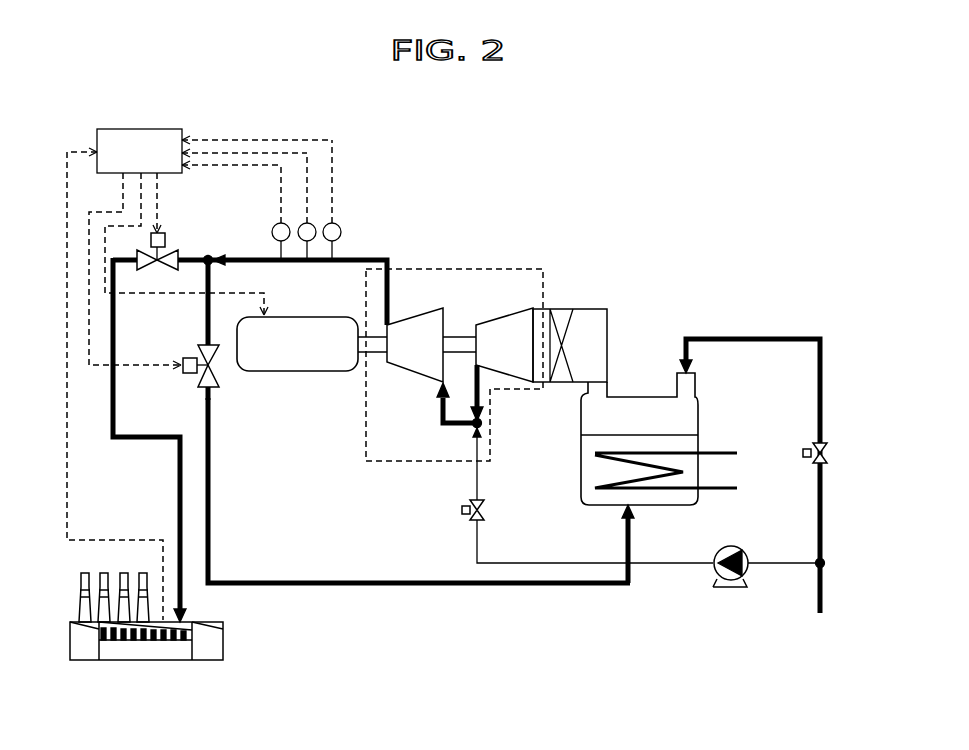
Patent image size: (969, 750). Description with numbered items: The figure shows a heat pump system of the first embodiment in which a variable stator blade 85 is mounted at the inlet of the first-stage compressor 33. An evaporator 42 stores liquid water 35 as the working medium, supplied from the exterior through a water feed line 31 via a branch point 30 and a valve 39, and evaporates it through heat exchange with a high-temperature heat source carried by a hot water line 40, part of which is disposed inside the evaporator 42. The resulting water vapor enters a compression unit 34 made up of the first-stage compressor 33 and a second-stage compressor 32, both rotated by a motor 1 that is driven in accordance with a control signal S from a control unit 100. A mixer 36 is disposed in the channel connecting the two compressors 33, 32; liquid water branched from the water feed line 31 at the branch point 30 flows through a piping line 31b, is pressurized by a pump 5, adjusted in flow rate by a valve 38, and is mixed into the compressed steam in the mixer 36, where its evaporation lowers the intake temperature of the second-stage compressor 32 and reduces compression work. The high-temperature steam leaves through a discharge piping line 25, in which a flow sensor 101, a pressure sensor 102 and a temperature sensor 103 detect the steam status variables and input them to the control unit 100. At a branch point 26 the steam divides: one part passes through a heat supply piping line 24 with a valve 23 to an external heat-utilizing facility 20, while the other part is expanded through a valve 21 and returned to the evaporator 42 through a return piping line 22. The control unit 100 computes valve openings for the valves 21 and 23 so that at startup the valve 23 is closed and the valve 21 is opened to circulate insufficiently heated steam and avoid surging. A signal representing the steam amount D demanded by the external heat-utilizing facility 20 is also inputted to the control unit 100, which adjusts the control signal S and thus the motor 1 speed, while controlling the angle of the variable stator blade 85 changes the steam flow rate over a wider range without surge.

The control unit 100 is at (140, 129).
The flow sensor 101 is at (272, 228).
The pressure sensor 102 is at (314, 224).
The temperature sensor 103 is at (338, 225).
The valve 23 is at (163, 249).
The heat supply piping line 24 is at (114, 330).
The discharge piping line 25 is at (378, 257).
The branch point 26 is at (212, 255).
The valve 21 is at (195, 378).
The control signal S is at (268, 298).
The motor 1 is at (297, 372).
The compression unit 34 is at (483, 261).
The second-stage compressor 32 is at (412, 319).
The first-stage compressor 33 is at (496, 319).
The variable stator blade 85 is at (559, 306).
The mixer 36 is at (470, 427).
The valve 38 is at (462, 510).
The evaporator 42 is at (700, 414).
The hot water line 40 is at (731, 452).
The liquid water 35 is at (658, 507).
The return piping line 22 is at (303, 580).
The pump 5 is at (730, 546).
The piping line 31b is at (687, 566).
The water feed line 31 is at (822, 508).
The valve 39 is at (828, 453).
The branch point 30 is at (824, 563).
The steam amount D is at (69, 488).
The external heat-utilizing facility 20 is at (140, 661).